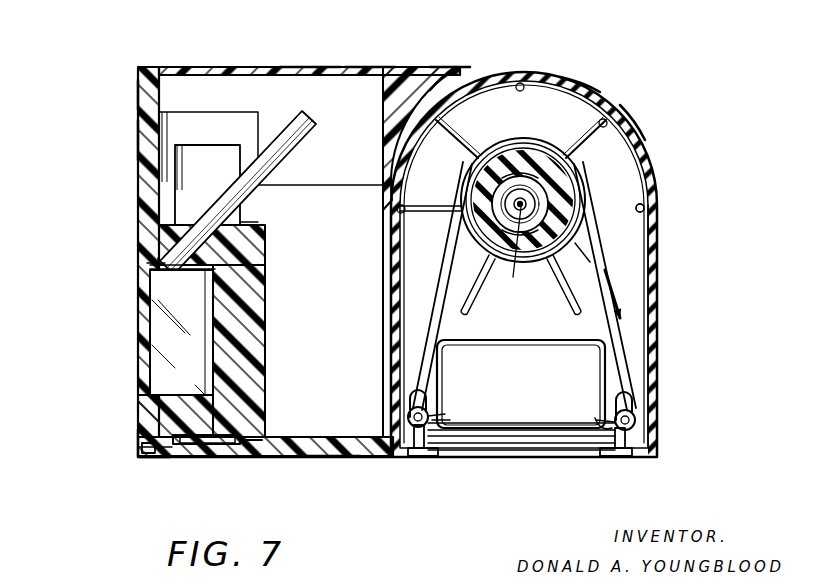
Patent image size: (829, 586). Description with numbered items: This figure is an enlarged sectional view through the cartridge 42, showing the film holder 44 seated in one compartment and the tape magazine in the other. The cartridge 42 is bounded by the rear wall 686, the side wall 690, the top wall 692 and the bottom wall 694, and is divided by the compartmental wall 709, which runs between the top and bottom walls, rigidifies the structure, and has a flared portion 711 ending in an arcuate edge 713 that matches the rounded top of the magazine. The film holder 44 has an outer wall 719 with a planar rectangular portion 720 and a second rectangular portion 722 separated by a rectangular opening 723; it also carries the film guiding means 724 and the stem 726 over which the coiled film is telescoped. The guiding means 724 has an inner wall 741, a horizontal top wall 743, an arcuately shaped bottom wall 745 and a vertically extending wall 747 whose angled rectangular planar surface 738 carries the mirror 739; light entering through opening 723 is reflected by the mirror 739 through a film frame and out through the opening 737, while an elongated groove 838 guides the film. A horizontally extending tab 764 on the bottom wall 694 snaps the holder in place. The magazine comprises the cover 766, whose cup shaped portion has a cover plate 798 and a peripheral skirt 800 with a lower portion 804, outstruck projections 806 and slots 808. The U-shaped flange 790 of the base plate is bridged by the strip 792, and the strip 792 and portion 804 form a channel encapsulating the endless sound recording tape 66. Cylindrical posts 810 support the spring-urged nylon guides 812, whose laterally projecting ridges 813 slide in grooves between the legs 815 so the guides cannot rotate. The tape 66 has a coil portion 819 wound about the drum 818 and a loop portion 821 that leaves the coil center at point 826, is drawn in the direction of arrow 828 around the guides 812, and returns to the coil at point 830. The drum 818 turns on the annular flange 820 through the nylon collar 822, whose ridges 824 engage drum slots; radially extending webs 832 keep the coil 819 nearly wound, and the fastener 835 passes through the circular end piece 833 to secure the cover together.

The cartridge 42 is at (452, 66).
The film holder 44 is at (133, 434).
The endless sound recording tape 66 is at (634, 388).
The rear wall 686 is at (362, 80).
The side wall 690 is at (658, 318).
The top wall 692 is at (318, 56).
The bottom wall 694 is at (327, 447).
The compartmental wall 709 is at (386, 270).
The flared portion 711 is at (388, 85).
The arcuate edge 713 is at (462, 87).
The outer wall 719 is at (134, 136).
The planar rectangular portion 720 is at (138, 98).
The second rectangular portion 722 is at (133, 452).
The rectangular opening 723 is at (145, 263).
The film guiding means 724 is at (263, 342).
The stem 726 is at (293, 152).
The opening 737 is at (195, 446).
The rectangular planar surface 738 is at (264, 272).
The mirror 739 is at (158, 327).
The inner wall 741 is at (267, 378).
The top wall 743 is at (236, 222).
The arcuately shaped bottom wall 745 is at (152, 405).
The vertically extending wall 747 is at (157, 270).
The horizontally extending tab 764 is at (148, 458).
The cover 766 is at (577, 84).
The flange 790 is at (507, 340).
The elongated rectangular strip 792 is at (473, 435).
The cover plate 798 is at (620, 148).
The peripheral skirt 800 is at (646, 210).
The skirt portion 804 is at (538, 448).
The outstruck projections 806 is at (624, 464).
The slots 808 is at (621, 394).
The cylindrical posts 810 is at (636, 421).
The nylon guides 812 is at (637, 427).
The laterally projecting ridges 813 is at (437, 418).
The legs 815 is at (435, 413).
The drum 818 is at (508, 160).
The coil portion 819 is at (521, 295).
The annular flange 820 is at (547, 198).
The loop portion 821 is at (435, 261).
The nylon collar 822 is at (545, 183).
The ridges 824 is at (537, 180).
The tape exit point 826 is at (578, 258).
The arrow 828 is at (612, 284).
The tape return point 830 is at (460, 190).
The radially extending webs 832 is at (506, 76).
The circular end piece 833 is at (508, 277).
The fastener 835 is at (528, 209).
The elongated groove 838 is at (185, 165).